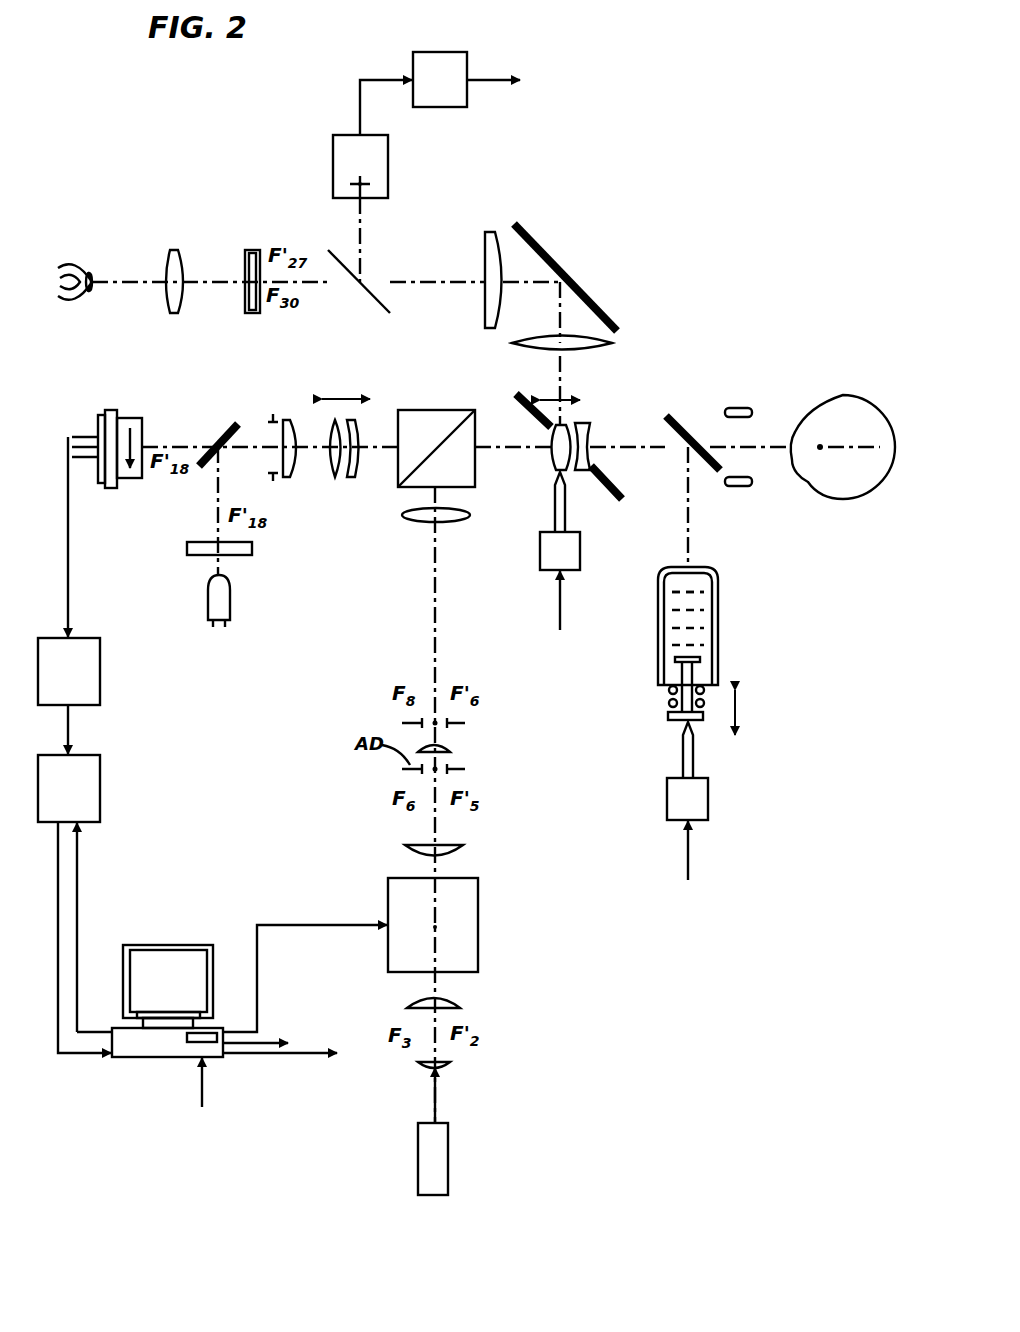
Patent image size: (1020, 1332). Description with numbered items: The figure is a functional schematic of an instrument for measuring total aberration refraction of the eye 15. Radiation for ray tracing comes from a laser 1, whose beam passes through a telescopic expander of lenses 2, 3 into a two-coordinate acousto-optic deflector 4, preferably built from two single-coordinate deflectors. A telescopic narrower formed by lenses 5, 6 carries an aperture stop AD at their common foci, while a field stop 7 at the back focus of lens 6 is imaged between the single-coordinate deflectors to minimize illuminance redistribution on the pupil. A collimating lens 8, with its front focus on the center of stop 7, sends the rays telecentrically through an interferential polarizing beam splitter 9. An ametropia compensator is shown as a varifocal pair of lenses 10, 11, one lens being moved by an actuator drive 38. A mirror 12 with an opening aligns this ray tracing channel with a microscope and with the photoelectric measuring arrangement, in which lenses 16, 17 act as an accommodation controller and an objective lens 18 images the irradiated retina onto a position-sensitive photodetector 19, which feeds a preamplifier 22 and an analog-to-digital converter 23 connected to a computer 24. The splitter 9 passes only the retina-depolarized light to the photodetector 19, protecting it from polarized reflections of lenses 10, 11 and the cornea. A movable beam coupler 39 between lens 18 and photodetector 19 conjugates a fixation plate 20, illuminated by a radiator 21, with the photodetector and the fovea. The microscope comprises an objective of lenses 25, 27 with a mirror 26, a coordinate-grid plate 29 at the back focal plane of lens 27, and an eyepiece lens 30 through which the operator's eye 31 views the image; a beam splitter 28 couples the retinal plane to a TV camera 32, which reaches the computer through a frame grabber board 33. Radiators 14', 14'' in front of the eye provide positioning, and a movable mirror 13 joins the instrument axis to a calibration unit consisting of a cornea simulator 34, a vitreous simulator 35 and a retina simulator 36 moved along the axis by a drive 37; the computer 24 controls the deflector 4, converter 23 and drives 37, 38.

The laser 1 is at (440, 1160).
The lens 2 is at (452, 1063).
The lens 3 is at (462, 1005).
The two-coordinate acousto-optic deflector 4 is at (480, 925).
The lens 5 is at (470, 845).
The lens 6 is at (452, 750).
The field stop or diaphragm 7 is at (466, 724).
The collimating lens 8 is at (420, 520).
The interferential polarizing beam splitter 9 is at (418, 410).
The lens 10 is at (552, 452).
The lens 11 is at (592, 432).
The mirror with opening 12 is at (615, 483).
The mirror 13 is at (685, 412).
The radiator 14' is at (758, 392).
The radiator 14'' is at (765, 496).
The eye 15 is at (848, 396).
The lens 16 is at (350, 480).
The lens 17 is at (332, 480).
The objective lens 18 is at (288, 418).
The position-sensitive photodetector 19 is at (122, 418).
The test-target or plate 20 is at (252, 552).
The light source or radiator 21 is at (230, 596).
The preamplifier 22 is at (100, 672).
The analog-to-digital converter 23 is at (100, 790).
The computer 24 is at (160, 1058).
The lens 25 is at (612, 343).
The mirror 26 is at (545, 240).
The lens 27 is at (490, 232).
The beam splitter 28 is at (370, 298).
The plate with first coordinate-grid 29 is at (252, 313).
The lens or group of lenses 30 is at (172, 313).
The observer eye 31 is at (74, 300).
The TV camera 32 is at (333, 150).
The video signal conversion and input board 33 is at (450, 52).
The meniscus or cornea simulator 34 is at (712, 575).
The liquid medium or vitreous simulator 35 is at (705, 622).
The retina simulator 36 is at (700, 660).
The actuator or drive 37 is at (667, 805).
The actuator drive 38 is at (540, 558).
The beam coupler 39 is at (232, 423).